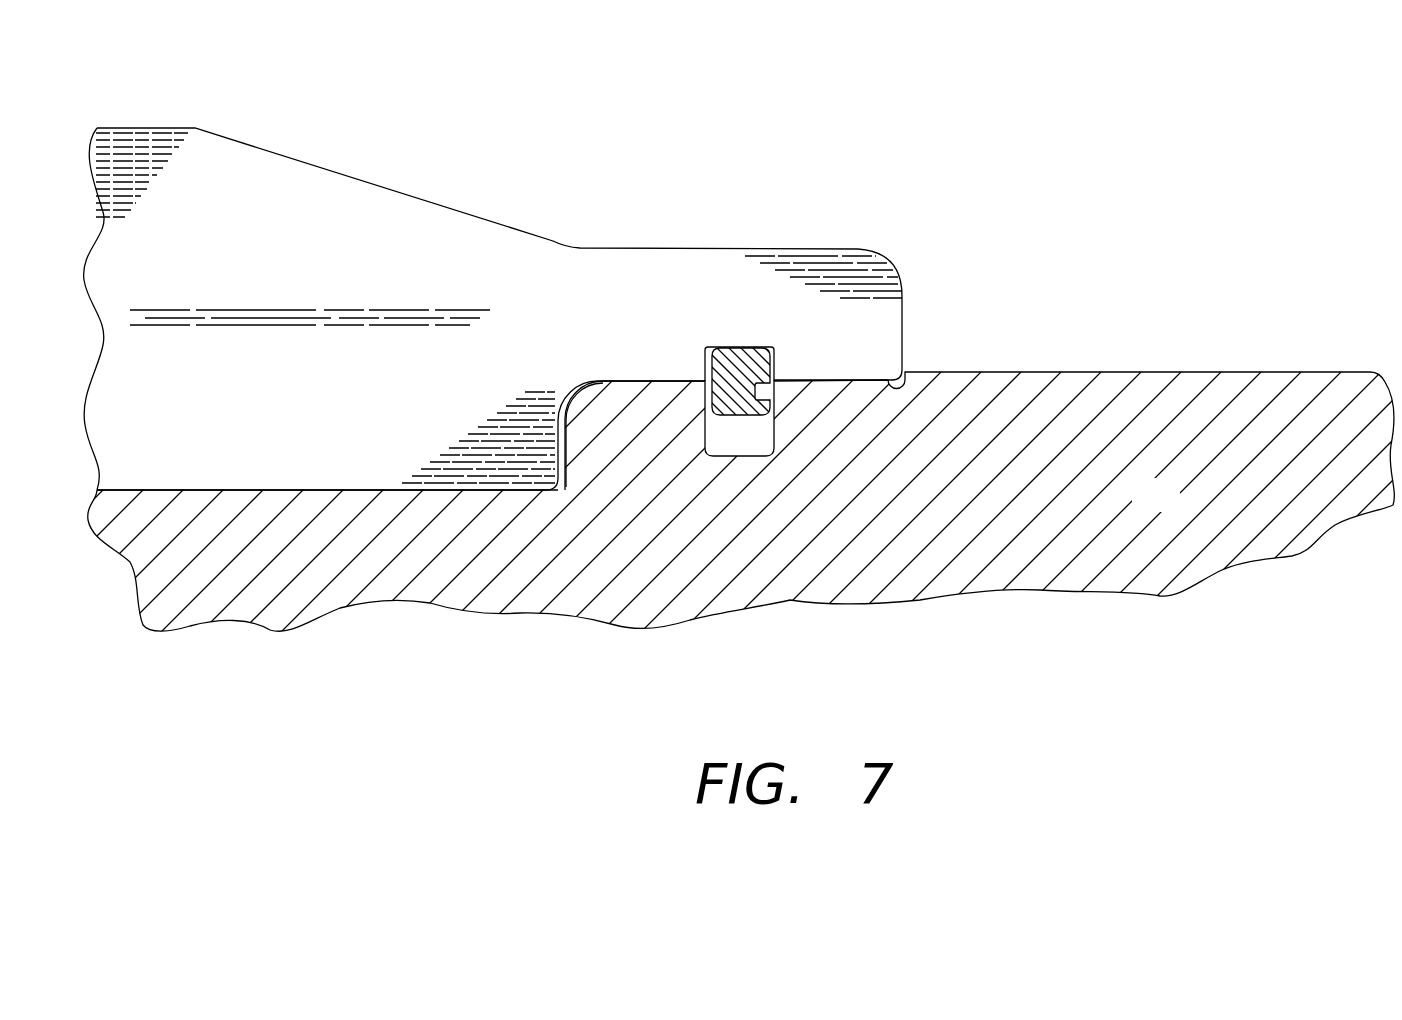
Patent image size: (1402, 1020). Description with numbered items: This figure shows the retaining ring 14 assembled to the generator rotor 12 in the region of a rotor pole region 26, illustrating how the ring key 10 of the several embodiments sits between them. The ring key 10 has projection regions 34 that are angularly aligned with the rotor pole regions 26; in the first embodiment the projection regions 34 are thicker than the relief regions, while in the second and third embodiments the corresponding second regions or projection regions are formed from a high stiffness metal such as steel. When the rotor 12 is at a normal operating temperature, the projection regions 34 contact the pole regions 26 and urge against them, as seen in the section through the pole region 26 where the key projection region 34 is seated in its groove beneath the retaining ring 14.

The retaining ring 14 is at (350, 212).
The generator rotor 12 is at (598, 558).
The rotor pole region 26 is at (1176, 508).
The projection region 34 is at (704, 348).
The ring key 10 is at (770, 346).